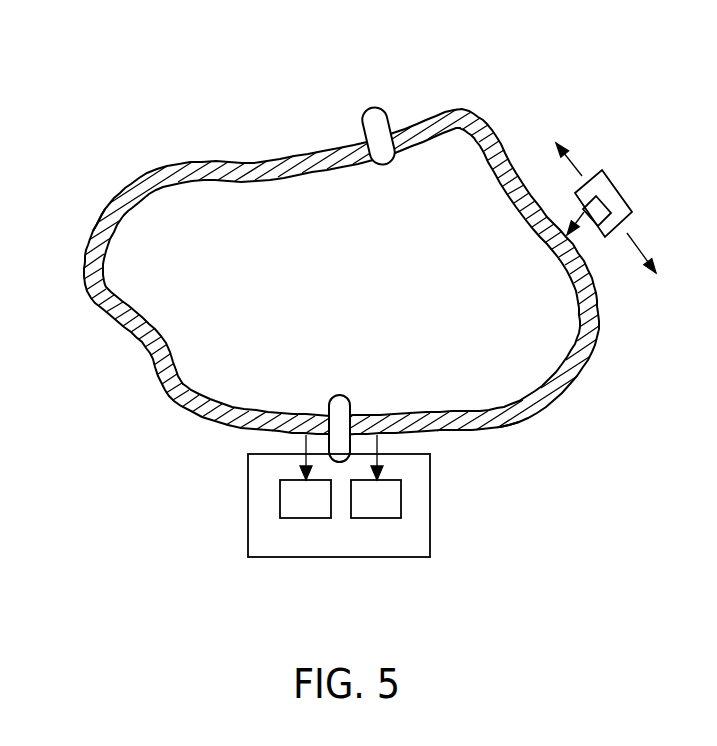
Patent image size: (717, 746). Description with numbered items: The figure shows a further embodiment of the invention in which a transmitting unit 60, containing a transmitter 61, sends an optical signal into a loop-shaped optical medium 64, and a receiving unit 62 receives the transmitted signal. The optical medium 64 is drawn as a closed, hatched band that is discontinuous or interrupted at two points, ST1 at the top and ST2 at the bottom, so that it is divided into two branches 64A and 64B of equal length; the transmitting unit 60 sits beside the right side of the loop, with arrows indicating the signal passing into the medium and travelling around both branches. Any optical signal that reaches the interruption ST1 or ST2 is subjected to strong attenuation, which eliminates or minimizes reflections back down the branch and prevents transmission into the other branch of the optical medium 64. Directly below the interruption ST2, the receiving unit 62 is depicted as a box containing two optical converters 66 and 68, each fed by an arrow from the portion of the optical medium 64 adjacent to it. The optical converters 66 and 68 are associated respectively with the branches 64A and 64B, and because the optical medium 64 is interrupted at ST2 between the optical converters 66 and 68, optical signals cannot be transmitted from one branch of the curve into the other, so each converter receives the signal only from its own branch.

The optical medium 64 is at (269, 192).
The first branch of the optical medium 64A is at (93, 243).
The second branch of the optical medium 64B is at (510, 426).
The first interruption point ST1 is at (386, 112).
The second interruption point ST2 is at (350, 400).
The transmitting unit 60 is at (627, 196).
The transmitter 61 is at (598, 197).
The receiving unit 62 is at (420, 532).
The optical converter 66 is at (361, 518).
The optical converter 68 is at (290, 518).